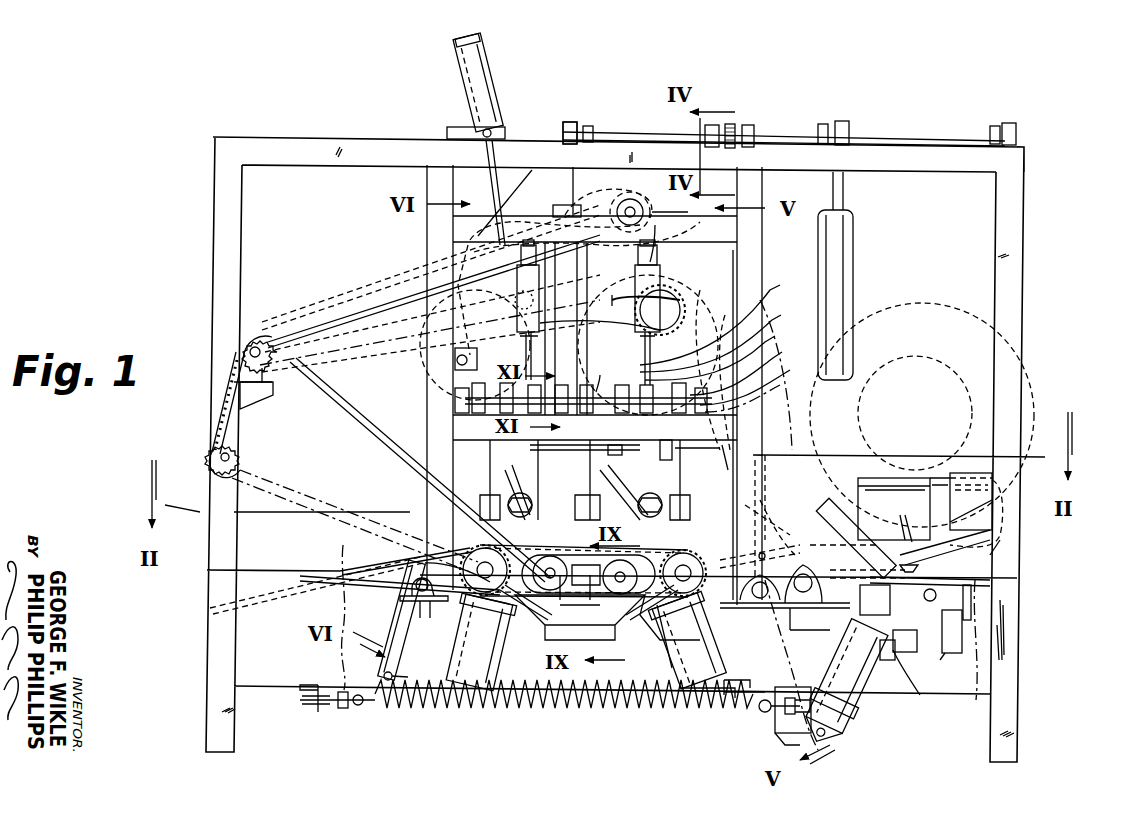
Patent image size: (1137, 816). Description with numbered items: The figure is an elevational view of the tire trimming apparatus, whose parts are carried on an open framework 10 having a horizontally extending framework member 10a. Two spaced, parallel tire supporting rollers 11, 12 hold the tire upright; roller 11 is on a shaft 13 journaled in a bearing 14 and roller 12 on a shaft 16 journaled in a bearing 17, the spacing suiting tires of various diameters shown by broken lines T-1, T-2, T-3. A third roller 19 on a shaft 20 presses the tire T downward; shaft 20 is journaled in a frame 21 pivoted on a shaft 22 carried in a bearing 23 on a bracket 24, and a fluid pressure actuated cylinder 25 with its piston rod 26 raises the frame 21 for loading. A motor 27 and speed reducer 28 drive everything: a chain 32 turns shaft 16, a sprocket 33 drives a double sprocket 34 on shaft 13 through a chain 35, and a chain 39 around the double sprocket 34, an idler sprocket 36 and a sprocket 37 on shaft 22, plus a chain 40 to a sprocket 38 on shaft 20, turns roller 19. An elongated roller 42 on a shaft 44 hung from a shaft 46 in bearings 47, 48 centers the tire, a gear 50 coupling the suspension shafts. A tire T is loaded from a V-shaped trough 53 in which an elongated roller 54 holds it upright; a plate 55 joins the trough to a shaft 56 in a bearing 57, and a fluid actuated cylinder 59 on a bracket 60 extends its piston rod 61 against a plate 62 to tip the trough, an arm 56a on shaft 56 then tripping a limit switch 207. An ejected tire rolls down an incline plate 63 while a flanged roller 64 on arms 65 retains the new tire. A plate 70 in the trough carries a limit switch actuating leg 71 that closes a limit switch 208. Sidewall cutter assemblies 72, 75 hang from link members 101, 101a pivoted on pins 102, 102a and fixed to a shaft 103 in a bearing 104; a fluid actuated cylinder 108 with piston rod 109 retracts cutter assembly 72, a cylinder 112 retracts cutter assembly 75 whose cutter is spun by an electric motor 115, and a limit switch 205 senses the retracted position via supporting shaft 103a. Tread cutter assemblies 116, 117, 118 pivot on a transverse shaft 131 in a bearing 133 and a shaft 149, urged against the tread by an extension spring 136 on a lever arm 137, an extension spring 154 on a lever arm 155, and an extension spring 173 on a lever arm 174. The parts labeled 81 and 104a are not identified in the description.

The framework 10 is at (1032, 275).
The horizontally extending framework member 10a is at (749, 370).
The tire supporting roller 11 is at (470, 550).
The tire supporting roller 12 is at (670, 550).
The shaft 13 is at (475, 560).
The bearing 14 is at (430, 607).
The shaft 16 is at (750, 582).
The bearing 17 is at (730, 640).
The third roller 19 is at (718, 210).
The shaft 20 is at (684, 310).
The frame 21 is at (362, 337).
The shaft 22 is at (238, 350).
The bearing 23 is at (270, 384).
The bracket 24 is at (244, 400).
The fluid pressure actuated cylinder 25 is at (482, 66).
The piston rod 26 is at (508, 206).
The motor 27 is at (965, 474).
The speed reducer 28 is at (870, 478).
The chain 32 is at (815, 515).
The sprocket 33 is at (690, 562).
The double sprocket 34 is at (460, 575).
The chain 35 is at (502, 635).
The idler sprocket 36 is at (245, 460).
The sprocket 37 is at (260, 333).
The sprocket 38 is at (672, 292).
The chain 39 is at (345, 443).
The chain 40 is at (376, 365).
The elongated roller 42 is at (566, 206).
The shaft 44 is at (573, 205).
The shaft 46 is at (604, 133).
The bearing 47 is at (582, 127).
The bearing 48 is at (704, 133).
The gear 50 is at (724, 130).
The trough 53 is at (995, 540).
The elongated roller 54 is at (838, 228).
The plate 55 is at (840, 505).
The shaft 56 is at (808, 608).
The arm 56a is at (790, 622).
The bearing 57 is at (900, 554).
The fluid actuated cylinder 59 is at (860, 700).
The bracket 60 is at (788, 725).
The piston rod 61 is at (892, 622).
The plate 62 is at (872, 555).
The incline plate 63 is at (296, 590).
The flanged roller 64 is at (460, 395).
The arms 65 is at (505, 195).
The plate 70 is at (910, 478).
The limit switch actuating leg 71 is at (915, 578).
The cutter assembly 72 is at (635, 475).
The cutter assembly 75 is at (538, 468).
The bracket 81 is at (680, 700).
The link member 101 is at (680, 460).
The link member 101a is at (596, 445).
The pin 102 is at (672, 470).
The pin 102a is at (625, 465).
The shaft 103 is at (721, 347).
The supporting shaft 103a is at (455, 348).
The bearing 104 is at (759, 376).
The valve 104a is at (608, 400).
The fluid actuated cylinder 108 is at (634, 276).
The piston rod 109 is at (665, 345).
The fluid actuated cylinder 112 is at (520, 292).
The electric motor 115 is at (458, 705).
The cutter assembly 116 is at (665, 642).
The cutter assembly 117 is at (585, 630).
The cutter assembly 118 is at (626, 640).
The transverse shaft 131 is at (395, 556).
The bearing 133 is at (414, 588).
The extension spring 136 is at (410, 672).
The lever arm 137 is at (400, 648).
The shaft 149 is at (766, 552).
The extension spring 154 is at (372, 703).
The lever arm 155 is at (760, 712).
The extension spring 173 is at (725, 700).
The lever arm 174 is at (660, 628).
The limit switch 205 is at (560, 380).
The limit switch 207 is at (921, 683).
The limit switch 208 is at (940, 655).
The tire T is at (1030, 368).
The tire outline T-1 is at (722, 315).
The tire outline T-2 is at (723, 333).
The tire outline T-3 is at (745, 363).